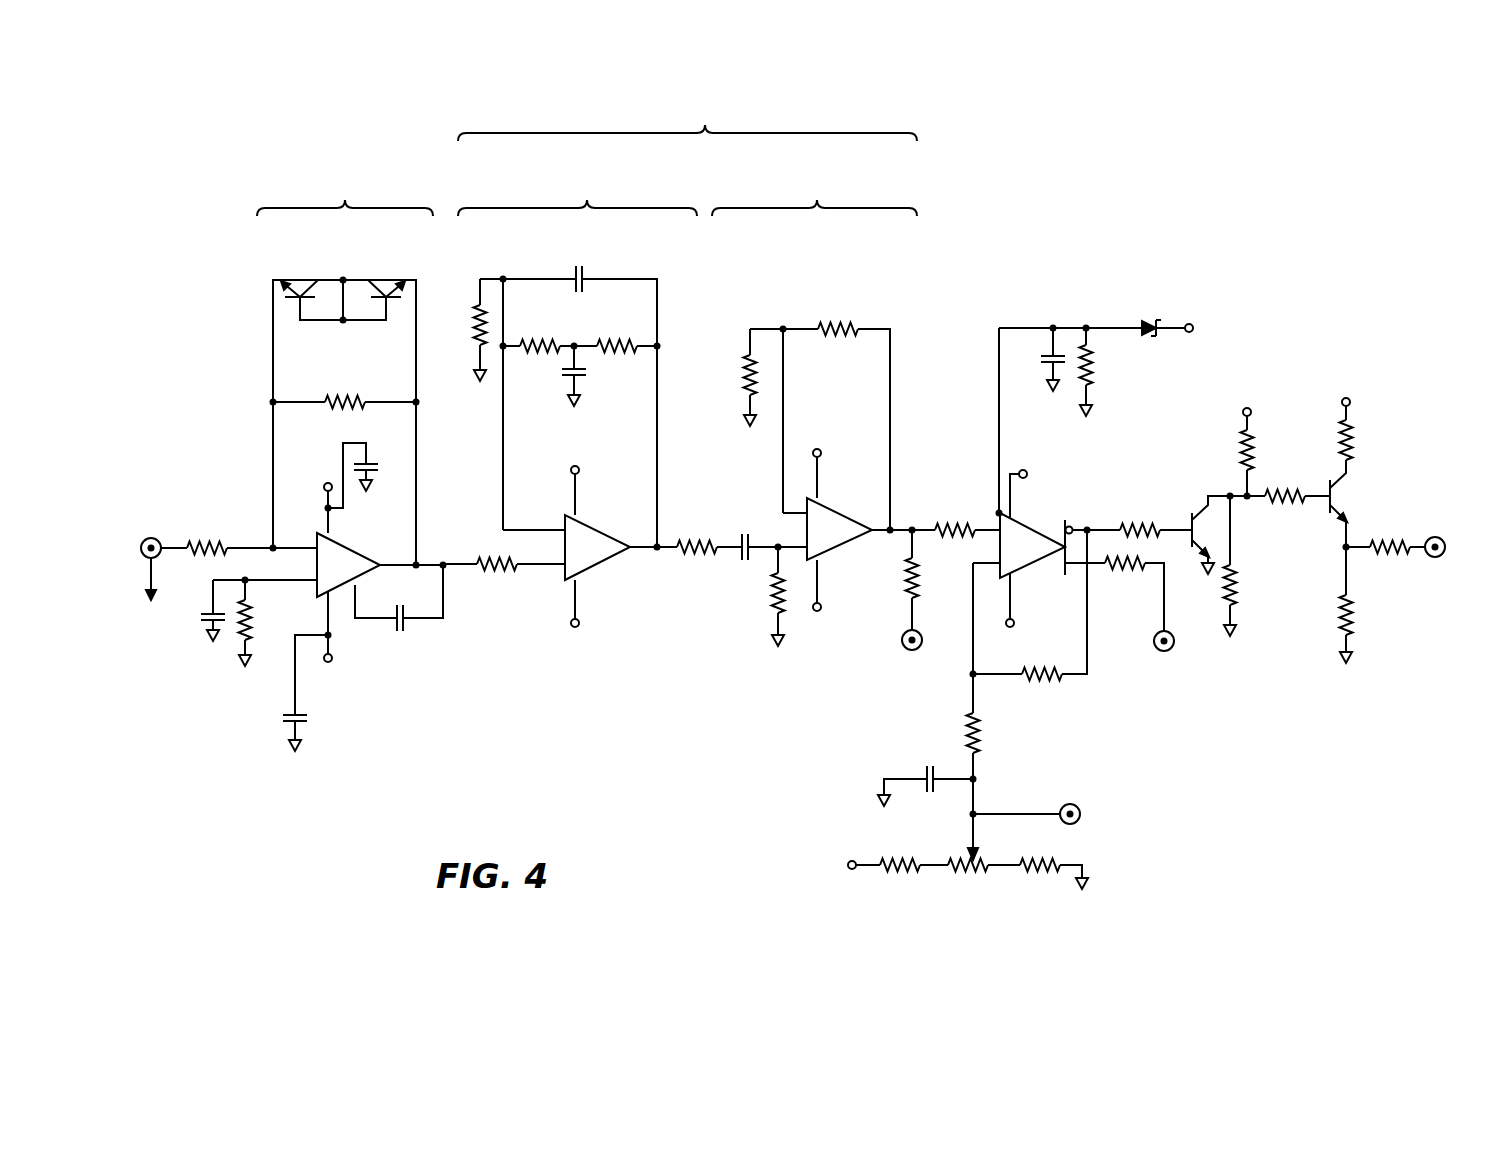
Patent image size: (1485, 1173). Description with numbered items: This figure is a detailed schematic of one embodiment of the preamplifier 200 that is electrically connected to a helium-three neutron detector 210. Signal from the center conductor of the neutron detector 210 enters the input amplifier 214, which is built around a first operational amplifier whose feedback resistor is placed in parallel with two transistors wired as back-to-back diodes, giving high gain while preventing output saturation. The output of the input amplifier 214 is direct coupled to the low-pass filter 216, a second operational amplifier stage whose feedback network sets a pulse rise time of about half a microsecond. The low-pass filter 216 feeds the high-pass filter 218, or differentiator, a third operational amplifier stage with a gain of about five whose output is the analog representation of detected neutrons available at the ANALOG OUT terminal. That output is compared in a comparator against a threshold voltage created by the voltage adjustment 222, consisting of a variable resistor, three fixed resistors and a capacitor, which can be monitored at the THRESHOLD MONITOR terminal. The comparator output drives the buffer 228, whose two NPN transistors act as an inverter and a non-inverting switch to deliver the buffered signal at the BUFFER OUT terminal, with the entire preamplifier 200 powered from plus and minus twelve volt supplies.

The preamplifier 200 is at (1262, 173).
The neutron detector 210 is at (151, 473).
The input amplifier 214 is at (310, 452).
The low-pass filter 216 is at (560, 405).
The high-pass filter 218 is at (1110, 225).
The voltage adjustment 222 is at (831, 809).
The buffer 228 is at (1338, 332).